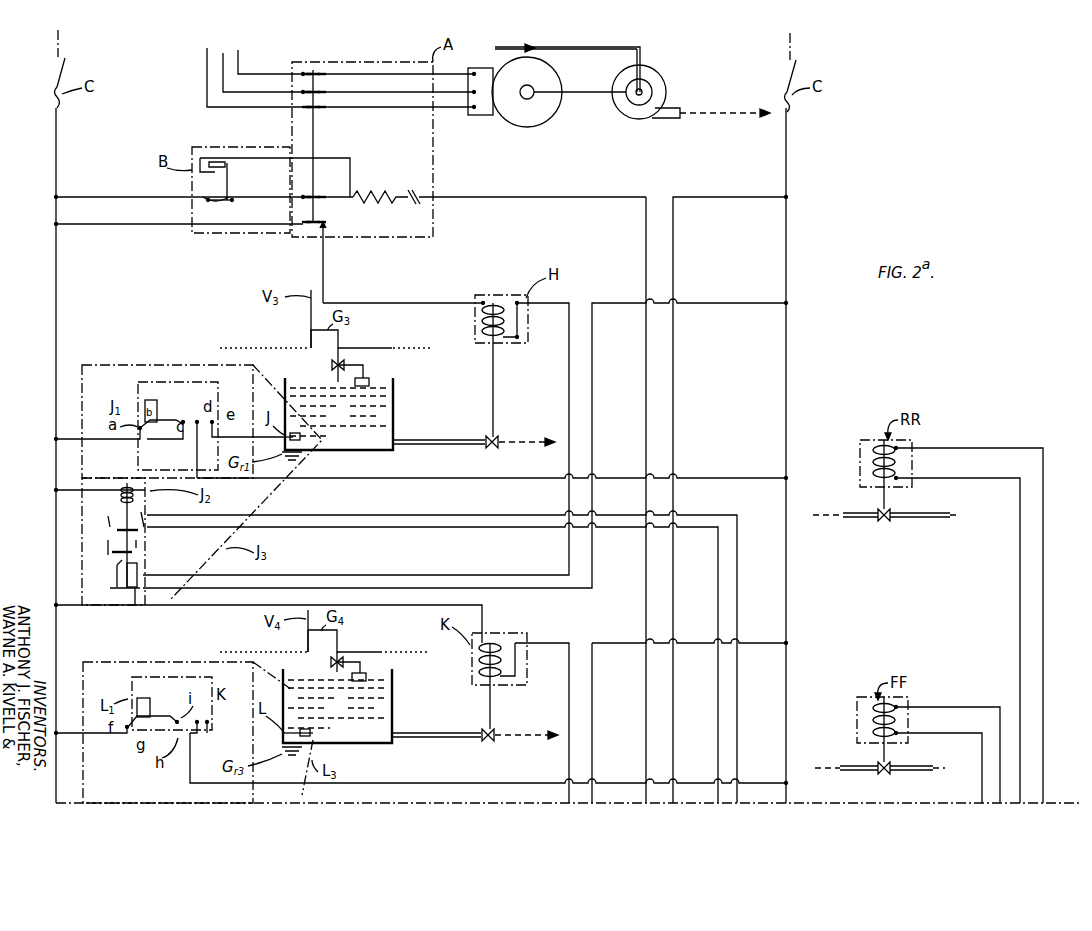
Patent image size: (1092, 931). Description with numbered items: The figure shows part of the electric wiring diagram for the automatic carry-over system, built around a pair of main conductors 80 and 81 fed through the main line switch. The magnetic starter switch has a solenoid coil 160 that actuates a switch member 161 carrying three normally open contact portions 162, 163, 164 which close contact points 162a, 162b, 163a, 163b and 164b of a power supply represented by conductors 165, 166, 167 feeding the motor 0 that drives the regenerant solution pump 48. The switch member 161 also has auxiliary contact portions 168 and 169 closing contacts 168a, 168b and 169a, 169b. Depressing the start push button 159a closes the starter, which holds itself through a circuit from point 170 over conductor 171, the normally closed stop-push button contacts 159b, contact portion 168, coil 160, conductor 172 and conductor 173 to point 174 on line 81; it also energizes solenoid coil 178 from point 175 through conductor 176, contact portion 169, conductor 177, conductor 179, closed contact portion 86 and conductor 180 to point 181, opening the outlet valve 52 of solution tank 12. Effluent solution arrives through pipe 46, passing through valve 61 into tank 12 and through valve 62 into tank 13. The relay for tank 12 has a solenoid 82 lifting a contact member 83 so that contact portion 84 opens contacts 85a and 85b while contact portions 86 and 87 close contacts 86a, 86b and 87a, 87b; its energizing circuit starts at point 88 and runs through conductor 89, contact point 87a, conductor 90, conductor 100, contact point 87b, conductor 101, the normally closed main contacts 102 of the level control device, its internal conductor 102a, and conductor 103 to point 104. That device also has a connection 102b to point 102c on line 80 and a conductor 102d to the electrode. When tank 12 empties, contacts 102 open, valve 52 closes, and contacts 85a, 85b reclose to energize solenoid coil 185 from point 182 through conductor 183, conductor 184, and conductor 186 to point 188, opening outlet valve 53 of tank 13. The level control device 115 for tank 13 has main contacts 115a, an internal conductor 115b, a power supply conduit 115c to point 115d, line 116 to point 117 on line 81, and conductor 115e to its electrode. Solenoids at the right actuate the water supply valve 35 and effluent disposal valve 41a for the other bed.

The main conductor 80 is at (56, 139).
The main conductor 81 is at (786, 140).
The power supply conductor 165 is at (207, 66).
The power supply conductor 166 is at (223, 55).
The power supply conductor 167 is at (250, 40).
The contact portion 164 is at (304, 72).
The contact point 164b is at (318, 72).
The contact portion 163 is at (326, 89).
The contact point 163b is at (327, 93).
The contact point 163a is at (303, 95).
The contact portion 162 is at (320, 110).
The contact point 162a is at (305, 107).
The contact point 162b is at (330, 108).
The switch member 161 is at (306, 159).
The start push button 159a is at (210, 155).
The stop-push button contacts 159b is at (234, 204).
The auxiliary contact portion 168 is at (305, 194).
The contact 168a is at (301, 197).
The contact 168b is at (324, 196).
The solenoid coil 160 is at (378, 193).
The auxiliary contact portion 169 is at (325, 222).
The contact 169a is at (303, 226).
The contact 169b is at (324, 230).
The point 170 is at (52, 197).
The conductor 171 is at (132, 195).
The point 175 is at (52, 226).
The conductor 176 is at (134, 226).
The conductor 172 is at (564, 196).
The point 174 is at (786, 197).
The motor 0 is at (541, 118).
The regenerant solution pump 48 is at (658, 114).
The conductor 177 is at (424, 303).
The solenoid coil 178 is at (496, 308).
The conductor 179 is at (570, 387).
The point 181 is at (786, 303).
The conductor 173 is at (674, 413).
The pipe 46 is at (354, 348).
The valve 61 is at (365, 366).
The solution tank 12 is at (339, 414).
The outlet valve 52 is at (498, 443).
The conductor 103 is at (477, 476).
The point 104 is at (788, 472).
The main contacts 102 is at (156, 403).
The internal conductor 102a is at (182, 439).
The connection 102b is at (92, 437).
The point 102c is at (52, 440).
The conductor 102d is at (242, 422).
The conductor 101 is at (142, 440).
The point 88 is at (78, 484).
The conductor 89 is at (66, 488).
The solenoid 82 is at (130, 484).
The contact member 83 is at (120, 486).
The contact portion 87 is at (138, 532).
The contact point 87a is at (108, 518).
The contact point 87b is at (144, 518).
The contact portion 86 is at (110, 553).
The contact point 86a is at (108, 540).
The contact point 86b is at (138, 545).
The contact point 85a is at (116, 568).
The contact point 85b is at (138, 566).
The contact portion 84 is at (110, 590).
The point 182 is at (54, 598).
The conductor 90 is at (480, 514).
The conductor 183 is at (64, 606).
The conductor 184 is at (222, 606).
The conductor 180 is at (568, 593).
The valve 62 is at (362, 663).
The solution tank 13 is at (337, 706).
The outlet valve 53 is at (484, 732).
The solenoid coil 185 is at (504, 646).
The conductor 186 is at (567, 722).
The point 188 is at (786, 643).
The conductor 100 is at (716, 704).
The line 116 is at (452, 783).
The point 117 is at (784, 782).
The switch 115 is at (137, 768).
The switch contact 115a is at (140, 701).
The internal conductor 115b is at (183, 700).
The power supply conduit 115c is at (100, 702).
The point 115d is at (56, 730).
The conductor 115e is at (232, 726).
The wash or teeter water supply valve 35 is at (886, 522).
The effluent disposal valve 41a is at (888, 768).